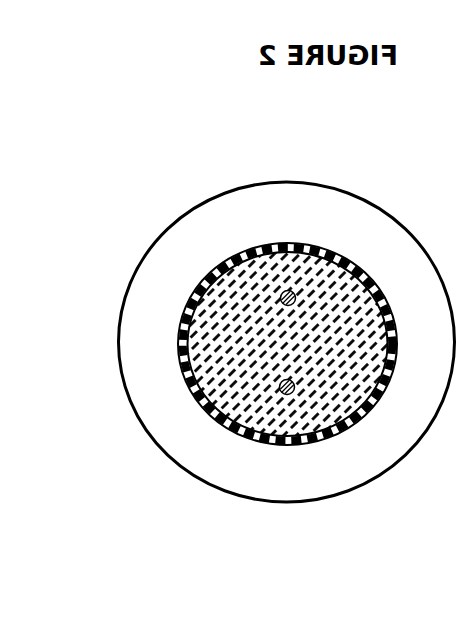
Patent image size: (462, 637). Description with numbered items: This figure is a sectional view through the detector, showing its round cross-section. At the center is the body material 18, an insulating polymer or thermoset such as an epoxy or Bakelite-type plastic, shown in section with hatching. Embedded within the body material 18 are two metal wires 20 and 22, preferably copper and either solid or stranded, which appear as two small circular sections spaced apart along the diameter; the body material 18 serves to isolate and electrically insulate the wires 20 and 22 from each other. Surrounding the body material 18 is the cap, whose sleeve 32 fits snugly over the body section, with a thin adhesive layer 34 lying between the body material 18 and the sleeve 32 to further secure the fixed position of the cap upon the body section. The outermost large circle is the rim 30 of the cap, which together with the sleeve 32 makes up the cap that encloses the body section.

The body material 18 is at (212, 318).
The wire 20 is at (280, 393).
The wire 22 is at (281, 296).
The rim 30 is at (252, 477).
The sleeve 32 is at (272, 244).
The adhesive layer 34 is at (347, 257).